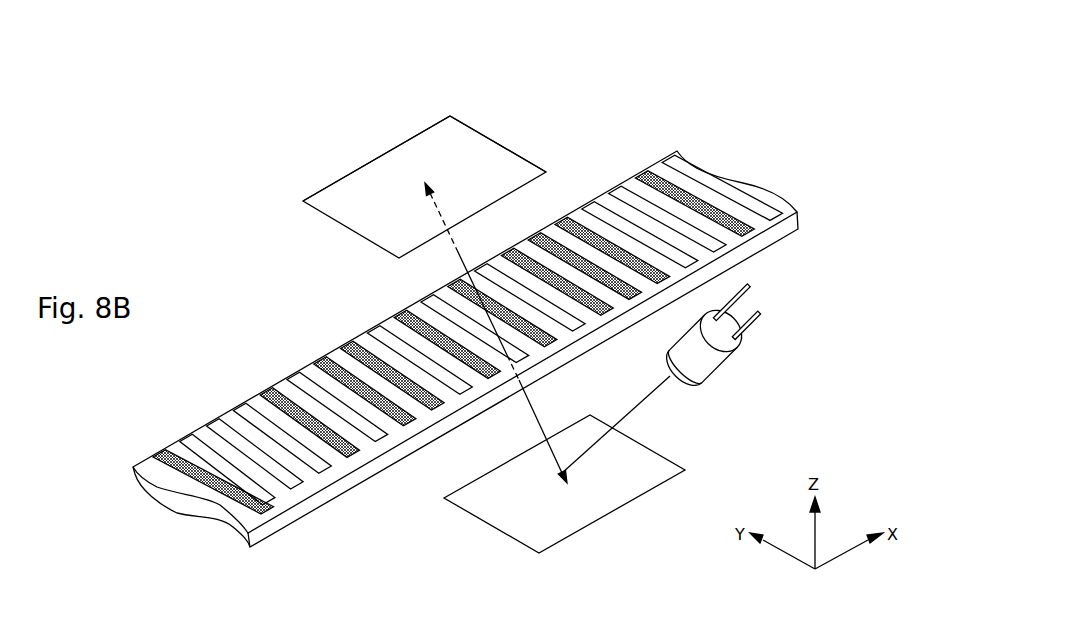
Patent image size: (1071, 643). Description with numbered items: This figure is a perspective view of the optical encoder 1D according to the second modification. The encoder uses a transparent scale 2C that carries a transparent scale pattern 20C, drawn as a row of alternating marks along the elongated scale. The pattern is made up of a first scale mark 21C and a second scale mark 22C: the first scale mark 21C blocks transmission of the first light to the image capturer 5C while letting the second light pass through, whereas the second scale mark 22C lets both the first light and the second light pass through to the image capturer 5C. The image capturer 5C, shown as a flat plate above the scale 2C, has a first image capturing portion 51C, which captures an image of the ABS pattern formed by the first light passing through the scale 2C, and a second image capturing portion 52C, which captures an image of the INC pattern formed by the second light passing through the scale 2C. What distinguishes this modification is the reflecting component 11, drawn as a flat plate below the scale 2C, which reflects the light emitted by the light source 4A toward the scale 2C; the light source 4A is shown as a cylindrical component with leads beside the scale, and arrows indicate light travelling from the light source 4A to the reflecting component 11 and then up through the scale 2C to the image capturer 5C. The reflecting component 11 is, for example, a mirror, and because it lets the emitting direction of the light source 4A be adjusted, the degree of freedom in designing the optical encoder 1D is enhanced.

The optical encoder 1D is at (768, 99).
The scale 2C is at (795, 261).
The image capturer 5C is at (326, 163).
The first image capturing portion 51C is at (448, 128).
The second image capturing portion 52C is at (510, 160).
The transparent scale pattern 20C is at (295, 372).
The first scale mark 21C is at (350, 350).
The second scale mark 22C is at (205, 423).
The light source 4A is at (722, 365).
The reflecting component 11 is at (548, 537).